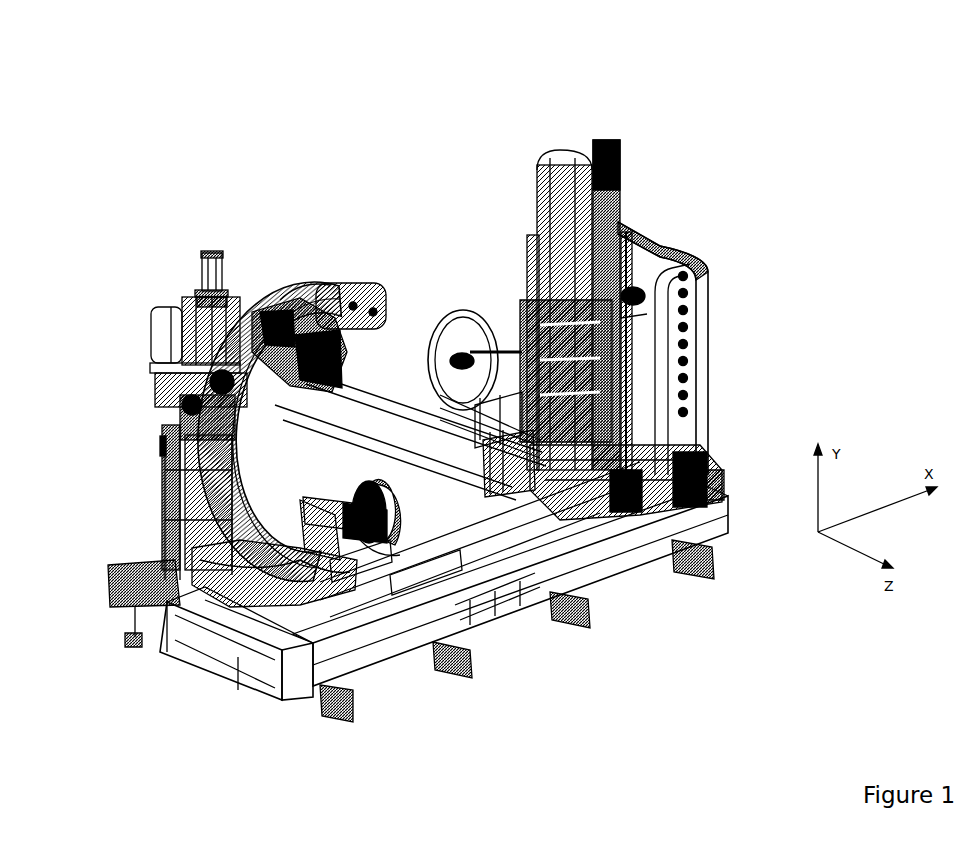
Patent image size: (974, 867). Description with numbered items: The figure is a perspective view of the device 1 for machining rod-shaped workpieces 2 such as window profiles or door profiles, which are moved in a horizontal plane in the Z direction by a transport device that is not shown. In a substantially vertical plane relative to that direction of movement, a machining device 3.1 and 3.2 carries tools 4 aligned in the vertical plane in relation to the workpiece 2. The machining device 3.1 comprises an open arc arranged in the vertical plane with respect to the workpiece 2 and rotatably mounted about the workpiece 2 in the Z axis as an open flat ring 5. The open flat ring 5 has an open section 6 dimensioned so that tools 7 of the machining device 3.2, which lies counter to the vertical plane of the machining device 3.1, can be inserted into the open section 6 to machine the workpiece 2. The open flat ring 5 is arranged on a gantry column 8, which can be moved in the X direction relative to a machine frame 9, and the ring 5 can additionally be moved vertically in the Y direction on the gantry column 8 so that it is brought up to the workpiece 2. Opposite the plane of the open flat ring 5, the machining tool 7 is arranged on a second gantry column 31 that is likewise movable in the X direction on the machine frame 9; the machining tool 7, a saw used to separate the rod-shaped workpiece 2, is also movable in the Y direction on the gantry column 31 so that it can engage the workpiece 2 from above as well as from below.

The device 1 is at (417, 179).
The rod-shaped workpiece 2 is at (386, 405).
The machining device 3.1 is at (176, 273).
The machining device 3.2 is at (656, 219).
The gantry column 31 is at (615, 330).
The tools 4 is at (328, 287).
The open flat ring 5 is at (268, 471).
The open section 6 is at (385, 560).
The machining tool 7 is at (465, 312).
The gantry column 8 is at (165, 456).
The machine frame 9 is at (620, 563).